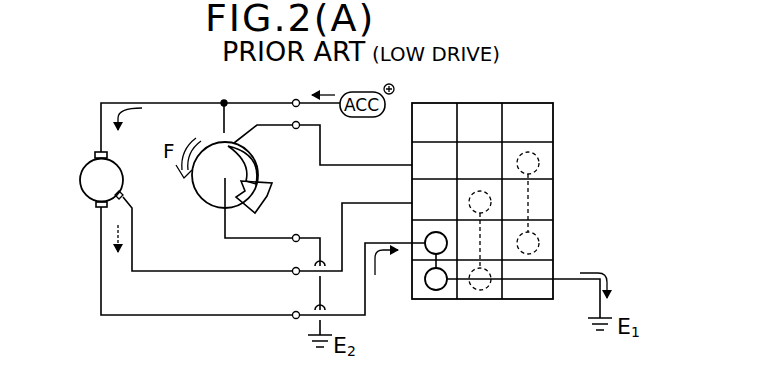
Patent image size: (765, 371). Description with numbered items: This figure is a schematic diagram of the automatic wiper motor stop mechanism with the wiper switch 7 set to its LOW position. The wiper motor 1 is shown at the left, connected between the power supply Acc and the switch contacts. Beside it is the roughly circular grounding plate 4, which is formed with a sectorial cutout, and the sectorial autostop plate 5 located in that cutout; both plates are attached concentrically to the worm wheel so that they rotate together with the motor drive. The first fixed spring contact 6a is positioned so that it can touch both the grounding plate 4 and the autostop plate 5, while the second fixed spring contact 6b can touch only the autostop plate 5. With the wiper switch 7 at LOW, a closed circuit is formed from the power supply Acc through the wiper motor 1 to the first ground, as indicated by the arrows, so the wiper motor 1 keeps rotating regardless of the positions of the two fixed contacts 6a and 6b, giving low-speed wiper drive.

The wiper motor 1 is at (87, 165).
The grounding plate 4 is at (197, 198).
The autostop plate 5 is at (270, 192).
The first fixed spring contact 6a is at (255, 160).
The second fixed spring contact 6b is at (224, 103).
The wiper switch 7 is at (522, 103).